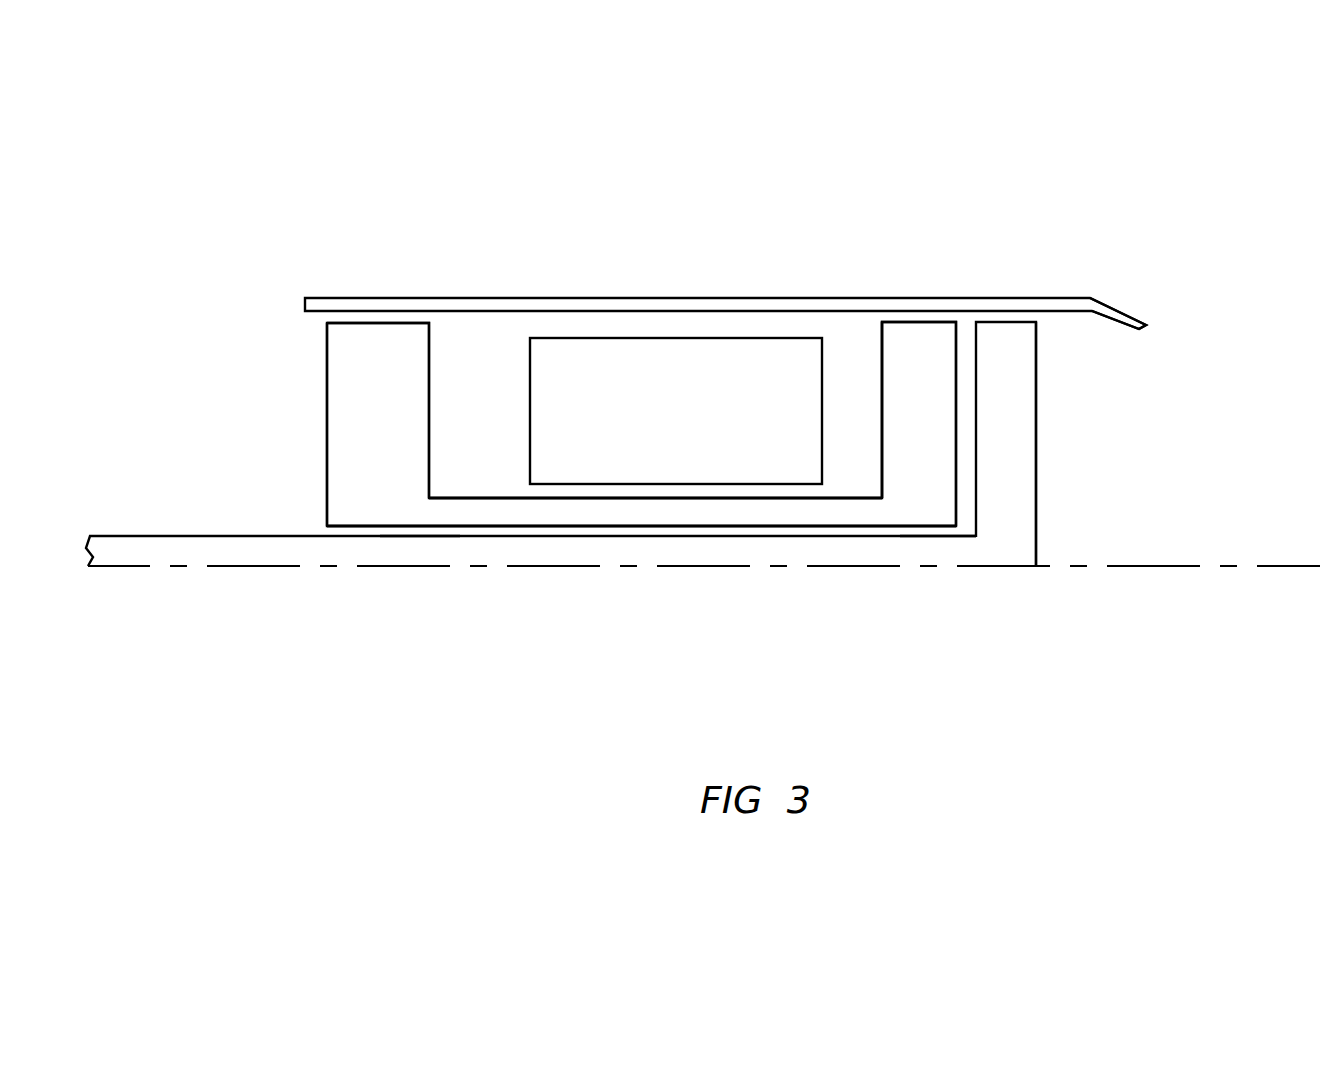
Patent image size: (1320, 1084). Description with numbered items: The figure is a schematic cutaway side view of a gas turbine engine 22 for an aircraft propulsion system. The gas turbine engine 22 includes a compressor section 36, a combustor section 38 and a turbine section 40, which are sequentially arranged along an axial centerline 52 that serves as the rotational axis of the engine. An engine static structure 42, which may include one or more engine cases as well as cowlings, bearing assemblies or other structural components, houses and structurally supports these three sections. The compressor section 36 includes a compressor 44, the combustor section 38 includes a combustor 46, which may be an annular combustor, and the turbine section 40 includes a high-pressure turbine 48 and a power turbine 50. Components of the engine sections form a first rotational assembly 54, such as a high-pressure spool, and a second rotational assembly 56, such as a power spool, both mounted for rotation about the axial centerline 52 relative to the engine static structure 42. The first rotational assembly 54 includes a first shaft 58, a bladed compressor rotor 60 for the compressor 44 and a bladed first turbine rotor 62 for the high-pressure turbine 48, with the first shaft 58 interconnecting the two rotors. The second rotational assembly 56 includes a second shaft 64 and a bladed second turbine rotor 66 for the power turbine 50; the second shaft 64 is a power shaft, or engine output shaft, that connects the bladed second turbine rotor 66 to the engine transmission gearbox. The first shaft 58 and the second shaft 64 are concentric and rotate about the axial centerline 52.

The gas turbine engine 22 is at (1028, 238).
The compressor section 36 is at (310, 503).
The combustor section 38 is at (570, 492).
The turbine section 40 is at (1057, 508).
The engine static structure 42 is at (899, 303).
The compressor 44 is at (374, 500).
The combustor 46 is at (729, 458).
The high-pressure turbine 48 is at (867, 482).
The power turbine 50 is at (1055, 345).
The axial centerline 52 is at (1232, 567).
The first rotational assembly 54 is at (490, 490).
The second rotational assembly 56 is at (943, 548).
The first shaft 58 is at (617, 510).
The bladed compressor rotor 60 is at (391, 389).
The bladed first turbine rotor 62 is at (933, 389).
The second shaft 64 is at (413, 548).
The bladed second turbine rotor 66 is at (1022, 389).